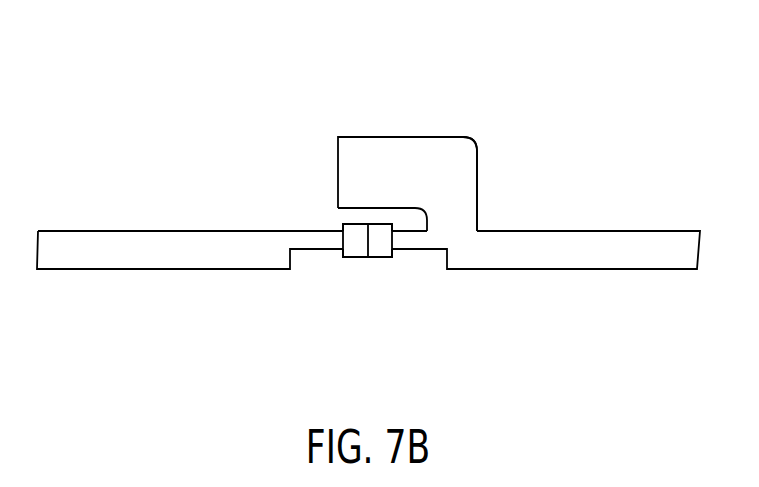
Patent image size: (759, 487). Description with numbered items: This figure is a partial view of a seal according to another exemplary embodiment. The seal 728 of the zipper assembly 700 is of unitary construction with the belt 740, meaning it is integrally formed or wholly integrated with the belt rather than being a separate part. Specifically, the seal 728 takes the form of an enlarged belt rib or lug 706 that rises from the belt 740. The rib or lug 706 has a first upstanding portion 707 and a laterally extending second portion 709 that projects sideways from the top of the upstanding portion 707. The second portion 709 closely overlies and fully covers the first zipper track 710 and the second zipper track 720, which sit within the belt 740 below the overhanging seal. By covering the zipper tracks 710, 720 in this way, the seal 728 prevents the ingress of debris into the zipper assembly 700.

The zipper assembly 700 is at (364, 318).
The enlarged belt rib or lug 706 is at (480, 137).
The first upstanding portion 707 is at (462, 217).
The second portion 709 is at (378, 150).
The first zipper track 710 is at (380, 258).
The second zipper track 720 is at (356, 258).
The seal 728 is at (412, 112).
The belt 740 is at (150, 269).